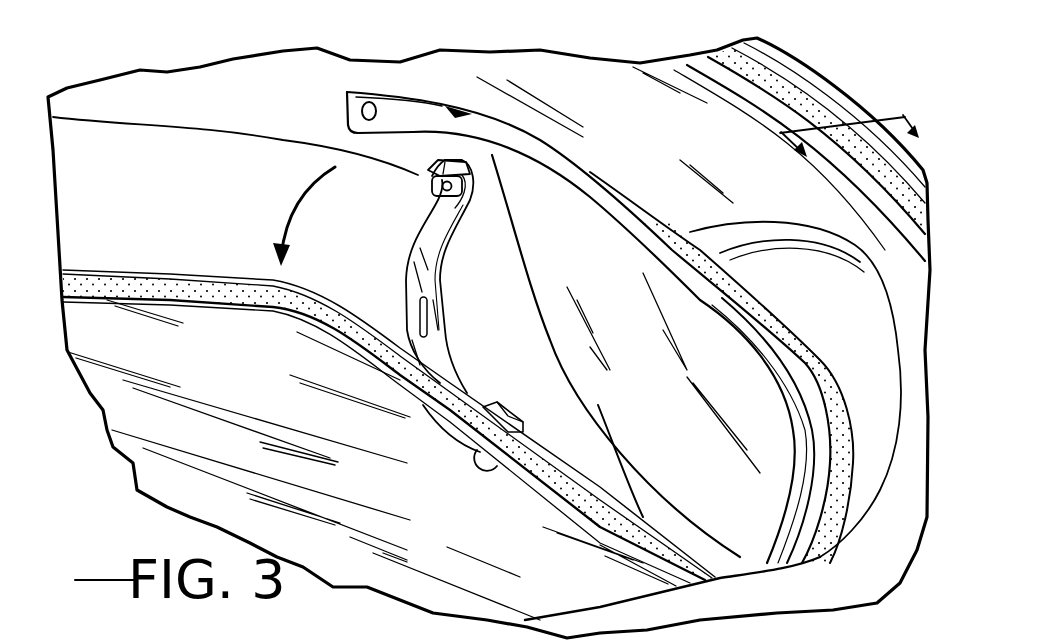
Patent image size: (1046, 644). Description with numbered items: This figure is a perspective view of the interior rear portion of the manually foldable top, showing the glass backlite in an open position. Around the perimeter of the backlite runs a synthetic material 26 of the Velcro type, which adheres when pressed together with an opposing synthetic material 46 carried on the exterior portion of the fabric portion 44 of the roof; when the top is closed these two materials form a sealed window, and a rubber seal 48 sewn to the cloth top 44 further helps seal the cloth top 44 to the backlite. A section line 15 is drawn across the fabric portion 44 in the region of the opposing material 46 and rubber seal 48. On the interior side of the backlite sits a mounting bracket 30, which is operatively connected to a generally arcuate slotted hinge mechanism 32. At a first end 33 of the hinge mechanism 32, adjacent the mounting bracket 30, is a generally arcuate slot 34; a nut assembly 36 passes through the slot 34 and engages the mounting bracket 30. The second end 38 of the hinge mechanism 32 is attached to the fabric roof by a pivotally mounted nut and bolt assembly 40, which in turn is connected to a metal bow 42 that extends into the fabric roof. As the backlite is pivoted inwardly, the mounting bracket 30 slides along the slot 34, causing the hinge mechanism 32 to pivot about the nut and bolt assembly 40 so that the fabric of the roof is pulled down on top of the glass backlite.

The section line 15- 15 is at (833, 118).
The synthetic material 26 is at (272, 313).
The mounting bracket 30 is at (530, 393).
The slotted hinge mechanism 32 is at (440, 290).
The first end 33 is at (447, 430).
The arcuate slot 34 is at (427, 332).
The nut assembly 36 is at (500, 470).
The second end 38 is at (470, 186).
The nut and bolt assembly 40 is at (428, 195).
The metal bow 42 is at (422, 168).
The fabric portion 44 is at (716, 126).
The opposing synthetic material 46 is at (867, 143).
The rubber seal 48 is at (876, 188).